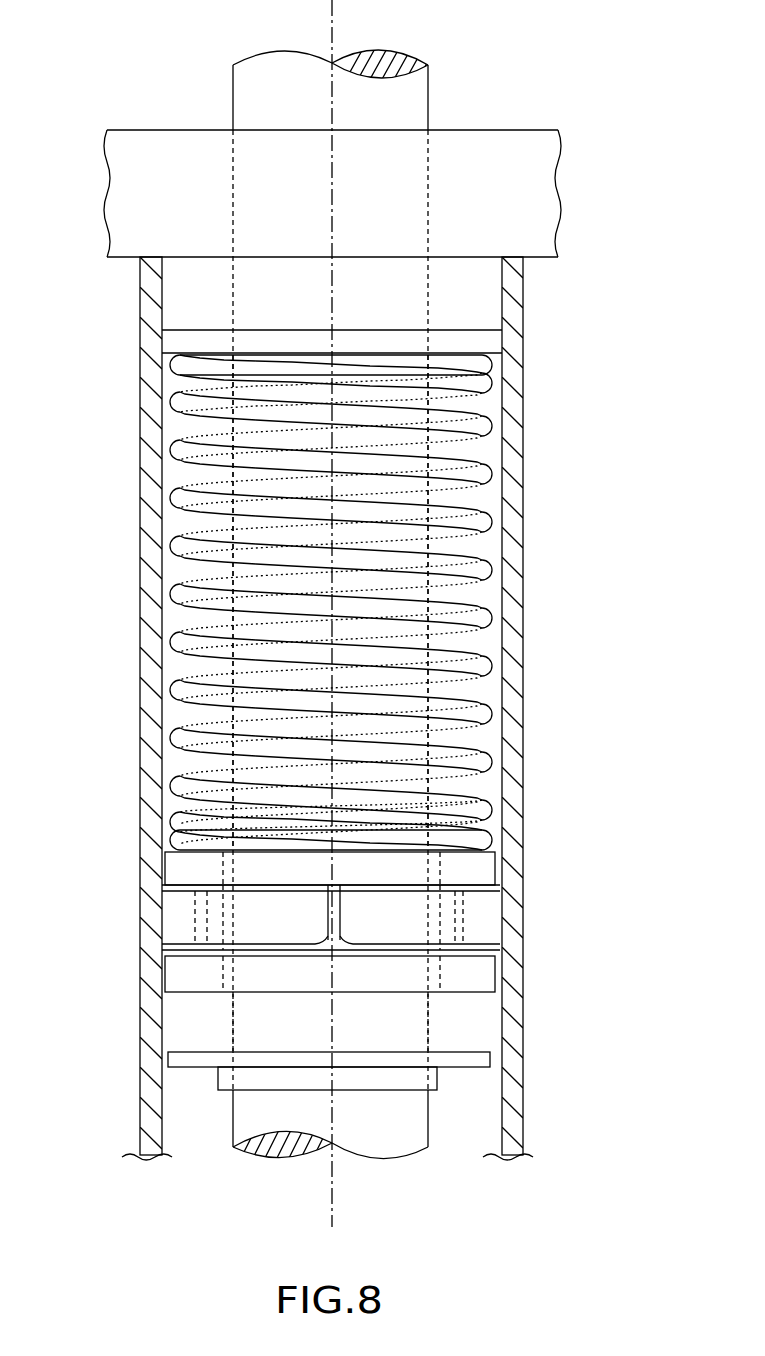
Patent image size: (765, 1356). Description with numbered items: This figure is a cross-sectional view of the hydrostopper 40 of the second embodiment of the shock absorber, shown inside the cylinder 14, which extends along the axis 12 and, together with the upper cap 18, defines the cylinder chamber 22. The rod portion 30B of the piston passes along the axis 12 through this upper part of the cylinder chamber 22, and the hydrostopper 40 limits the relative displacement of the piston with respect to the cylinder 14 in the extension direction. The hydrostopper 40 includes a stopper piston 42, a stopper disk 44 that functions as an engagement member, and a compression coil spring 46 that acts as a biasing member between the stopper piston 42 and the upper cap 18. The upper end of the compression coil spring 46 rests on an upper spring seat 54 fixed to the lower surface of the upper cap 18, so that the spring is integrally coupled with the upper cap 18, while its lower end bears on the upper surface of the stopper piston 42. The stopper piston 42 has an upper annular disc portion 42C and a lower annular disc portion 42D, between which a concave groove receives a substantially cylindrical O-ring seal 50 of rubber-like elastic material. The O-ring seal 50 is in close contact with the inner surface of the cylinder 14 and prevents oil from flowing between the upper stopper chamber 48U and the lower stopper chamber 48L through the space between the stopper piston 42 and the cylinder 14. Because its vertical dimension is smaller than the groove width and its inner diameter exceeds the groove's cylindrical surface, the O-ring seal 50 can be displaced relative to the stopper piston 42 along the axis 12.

The axis 12 is at (332, 3).
The cylinder 14 is at (150, 480).
The upper cap 18 is at (550, 197).
The cylinder chamber 22 is at (185, 1110).
The rod portion 30B is at (377, 1150).
The hydrostopper 40 is at (506, 776).
The stopper piston 42 is at (335, 914).
The upper annular disc portion 42C is at (480, 866).
The lower annular disc portion 42D is at (480, 972).
The stopper disk 44 is at (172, 1058).
The compression coil spring 46 is at (493, 476).
The upper stopper chamber 48U is at (480, 551).
The lower stopper chamber 48L is at (478, 1036).
The O-ring seal 50 is at (172, 918).
The upper spring seat 54 is at (493, 343).